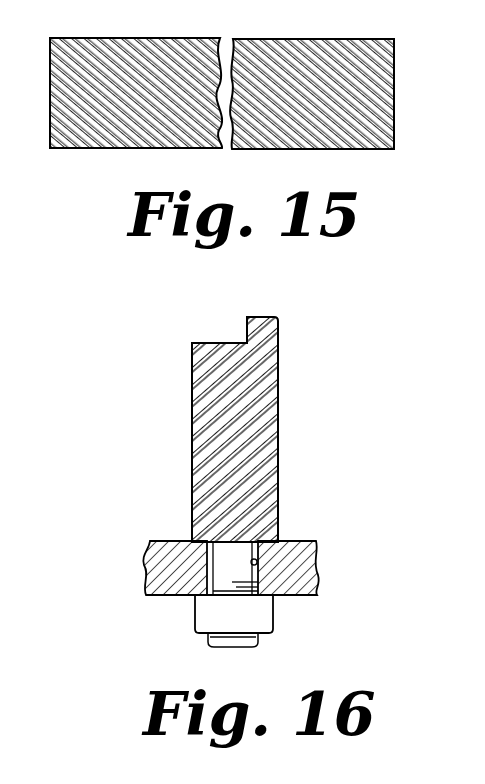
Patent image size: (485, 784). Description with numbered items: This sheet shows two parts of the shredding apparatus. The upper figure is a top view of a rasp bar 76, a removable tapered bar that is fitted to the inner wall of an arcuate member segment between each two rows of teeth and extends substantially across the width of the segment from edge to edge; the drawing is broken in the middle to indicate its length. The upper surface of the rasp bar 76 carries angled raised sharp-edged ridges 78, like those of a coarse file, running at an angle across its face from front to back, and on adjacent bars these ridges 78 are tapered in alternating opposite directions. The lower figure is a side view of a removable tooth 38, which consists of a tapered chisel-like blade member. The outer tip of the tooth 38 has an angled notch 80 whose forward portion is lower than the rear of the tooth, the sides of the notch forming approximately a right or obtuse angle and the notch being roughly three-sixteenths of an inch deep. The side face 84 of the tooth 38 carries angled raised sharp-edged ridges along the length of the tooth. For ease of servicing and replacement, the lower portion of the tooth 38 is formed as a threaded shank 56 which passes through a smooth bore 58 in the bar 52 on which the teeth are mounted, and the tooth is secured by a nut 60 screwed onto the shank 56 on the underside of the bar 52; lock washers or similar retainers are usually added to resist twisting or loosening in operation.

In FIG. 15, the rasp bar 76 is at (114, 163).
In FIG. 15, the ridges 78 is at (328, 58).
In FIG. 16, the tooth 38 is at (279, 372).
In FIG. 16, the angled notch 80 is at (248, 333).
In FIG. 16, the side face 84 is at (196, 357).
In FIG. 16, the bar 52 is at (165, 562).
In FIG. 16, the smooth bore 58 is at (257, 560).
In FIG. 16, the nut 60 is at (260, 615).
In FIG. 16, the threaded shank 56 is at (215, 636).